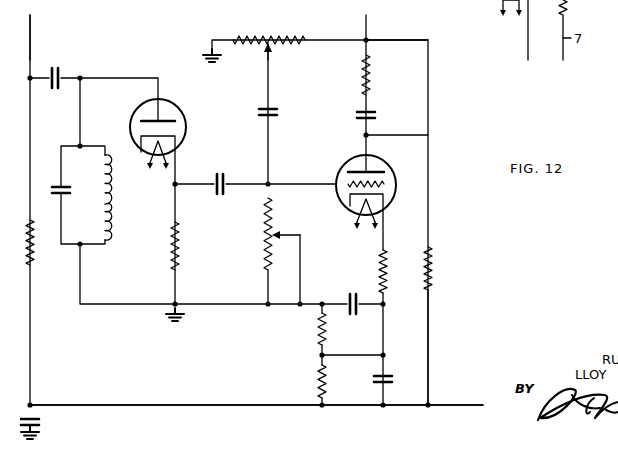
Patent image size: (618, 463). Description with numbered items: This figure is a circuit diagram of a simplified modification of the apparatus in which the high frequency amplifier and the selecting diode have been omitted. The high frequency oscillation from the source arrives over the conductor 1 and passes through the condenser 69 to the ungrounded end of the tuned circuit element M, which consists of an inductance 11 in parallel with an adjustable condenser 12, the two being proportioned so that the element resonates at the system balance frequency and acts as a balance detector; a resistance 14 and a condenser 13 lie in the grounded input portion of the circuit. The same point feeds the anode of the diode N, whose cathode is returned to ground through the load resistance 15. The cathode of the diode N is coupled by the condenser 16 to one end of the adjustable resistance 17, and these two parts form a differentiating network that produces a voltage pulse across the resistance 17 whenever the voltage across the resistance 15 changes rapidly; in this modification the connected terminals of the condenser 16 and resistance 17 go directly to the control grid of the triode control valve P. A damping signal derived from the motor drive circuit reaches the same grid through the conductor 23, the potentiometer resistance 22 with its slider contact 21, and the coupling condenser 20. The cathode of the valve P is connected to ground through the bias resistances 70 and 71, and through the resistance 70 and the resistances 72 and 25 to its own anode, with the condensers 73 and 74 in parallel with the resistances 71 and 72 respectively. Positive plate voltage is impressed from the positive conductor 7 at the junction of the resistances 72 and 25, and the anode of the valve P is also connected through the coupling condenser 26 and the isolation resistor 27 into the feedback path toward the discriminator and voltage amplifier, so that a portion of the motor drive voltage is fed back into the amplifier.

The conductor 1 is at (31, 28).
The condenser 69 is at (56, 66).
The adjustable condenser 12 is at (50, 188).
The inductance 11 is at (99, 170).
The tuned circuit element M is at (110, 246).
The resistance 14 is at (33, 258).
The condenser 13 is at (41, 422).
The conductor 7 is at (176, 403).
The diode N is at (178, 108).
The load resistance 15 is at (179, 247).
The condenser 16 is at (218, 170).
The adjustable resistance 17 is at (265, 230).
The coupling condenser 20 is at (258, 111).
The potentiometer resistance 22 is at (272, 35).
The slider contact 21 is at (272, 48).
The conductor 23 is at (422, 16).
The isolation resistor 27 is at (370, 78).
The coupling condenser 26 is at (354, 115).
The triode control valve P is at (388, 164).
The bias resistance 70 is at (387, 277).
The resistor 25 is at (432, 268).
The condenser 73 is at (352, 290).
The bias resistance 71 is at (318, 332).
The resistance 72 is at (318, 380).
The condenser 74 is at (393, 381).